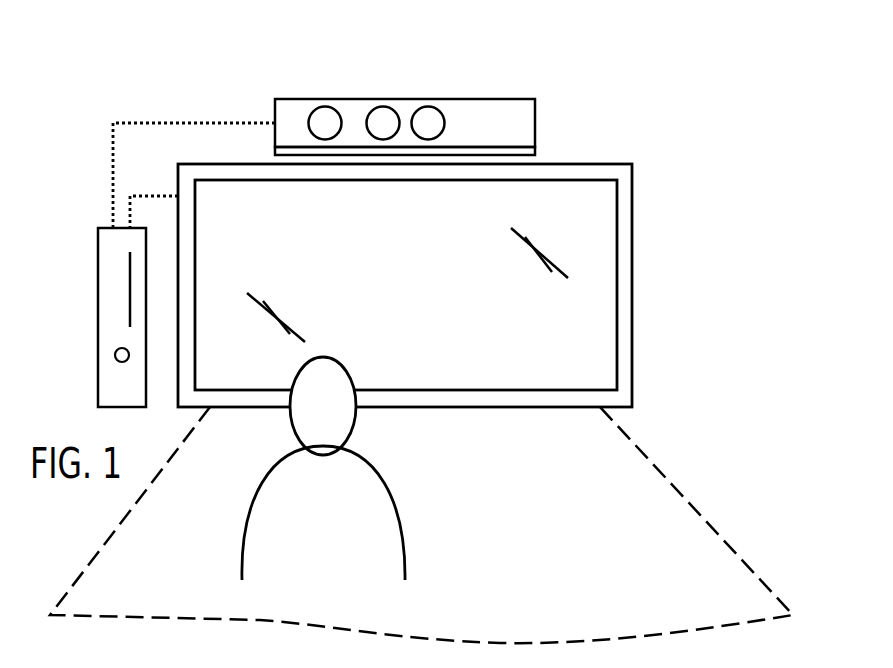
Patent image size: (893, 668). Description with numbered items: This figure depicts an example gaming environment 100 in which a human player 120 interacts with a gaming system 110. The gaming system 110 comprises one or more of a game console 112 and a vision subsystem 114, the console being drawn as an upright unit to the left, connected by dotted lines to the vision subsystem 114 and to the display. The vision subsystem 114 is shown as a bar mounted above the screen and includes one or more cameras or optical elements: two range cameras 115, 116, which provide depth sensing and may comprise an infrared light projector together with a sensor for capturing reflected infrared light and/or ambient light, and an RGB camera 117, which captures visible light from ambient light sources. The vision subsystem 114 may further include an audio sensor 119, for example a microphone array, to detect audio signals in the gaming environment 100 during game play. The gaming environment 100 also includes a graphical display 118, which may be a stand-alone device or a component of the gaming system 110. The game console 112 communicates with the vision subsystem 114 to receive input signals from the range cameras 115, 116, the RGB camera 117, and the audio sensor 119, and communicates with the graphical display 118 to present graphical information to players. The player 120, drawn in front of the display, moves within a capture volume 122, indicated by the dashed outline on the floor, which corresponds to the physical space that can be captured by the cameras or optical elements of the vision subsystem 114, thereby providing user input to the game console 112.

The gaming environment 100 is at (681, 139).
The gaming system 110 is at (126, 88).
The game console 112 is at (138, 395).
The vision subsystem 114 is at (511, 134).
The range camera 115 is at (330, 107).
The range camera 116 is at (437, 108).
The RGB camera 117 is at (385, 107).
The graphical display 118 is at (551, 355).
The audio sensor 119 is at (536, 152).
The player 120 is at (373, 530).
The capture volume 122 is at (648, 578).